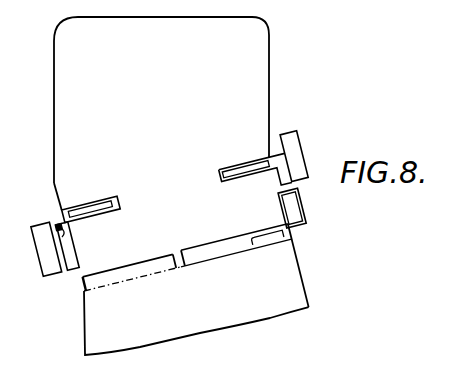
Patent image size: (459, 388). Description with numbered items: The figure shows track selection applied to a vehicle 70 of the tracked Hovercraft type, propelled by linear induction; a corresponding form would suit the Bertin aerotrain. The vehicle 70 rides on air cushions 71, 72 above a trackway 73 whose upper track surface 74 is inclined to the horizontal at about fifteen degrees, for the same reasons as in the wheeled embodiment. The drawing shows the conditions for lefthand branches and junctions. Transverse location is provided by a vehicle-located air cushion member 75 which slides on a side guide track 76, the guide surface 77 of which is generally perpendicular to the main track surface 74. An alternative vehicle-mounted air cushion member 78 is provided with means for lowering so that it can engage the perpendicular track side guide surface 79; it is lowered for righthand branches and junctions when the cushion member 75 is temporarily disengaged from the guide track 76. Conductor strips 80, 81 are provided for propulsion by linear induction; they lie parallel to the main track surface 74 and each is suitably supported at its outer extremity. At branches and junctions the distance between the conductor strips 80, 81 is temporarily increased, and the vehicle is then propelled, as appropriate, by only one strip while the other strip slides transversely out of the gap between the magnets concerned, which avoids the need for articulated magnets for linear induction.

The vehicle 70 is at (165, 112).
The air cushion 71 is at (110, 276).
The air cushion 72 is at (212, 248).
The trackway 73 is at (211, 313).
The upper track surface 74 is at (278, 235).
The air cushion member 75 is at (70, 258).
The side guide track 76 is at (51, 258).
The guide surface 77 is at (58, 223).
The alternative air cushion member 78 is at (298, 207).
The track side guide surface 79 is at (297, 266).
The conductor strip 80 is at (97, 205).
The conductor strip 81 is at (237, 178).